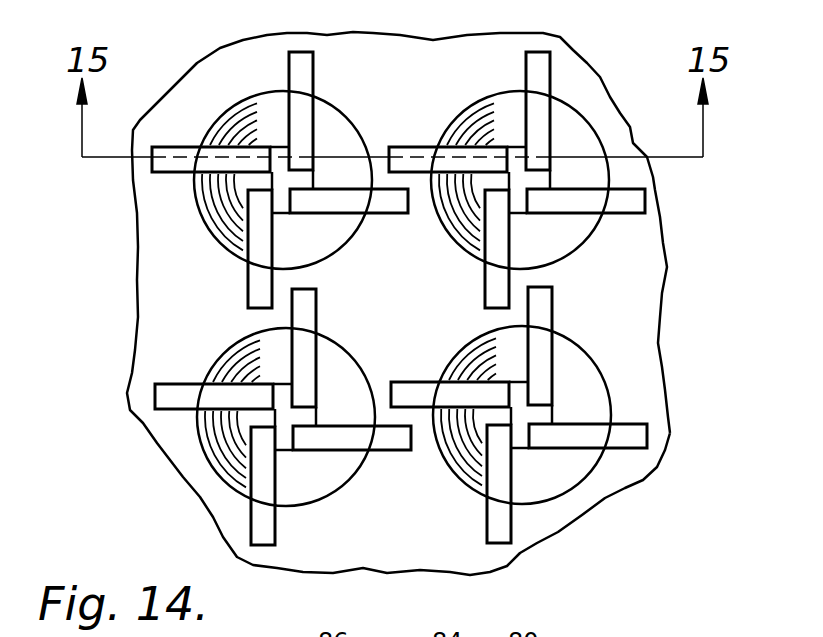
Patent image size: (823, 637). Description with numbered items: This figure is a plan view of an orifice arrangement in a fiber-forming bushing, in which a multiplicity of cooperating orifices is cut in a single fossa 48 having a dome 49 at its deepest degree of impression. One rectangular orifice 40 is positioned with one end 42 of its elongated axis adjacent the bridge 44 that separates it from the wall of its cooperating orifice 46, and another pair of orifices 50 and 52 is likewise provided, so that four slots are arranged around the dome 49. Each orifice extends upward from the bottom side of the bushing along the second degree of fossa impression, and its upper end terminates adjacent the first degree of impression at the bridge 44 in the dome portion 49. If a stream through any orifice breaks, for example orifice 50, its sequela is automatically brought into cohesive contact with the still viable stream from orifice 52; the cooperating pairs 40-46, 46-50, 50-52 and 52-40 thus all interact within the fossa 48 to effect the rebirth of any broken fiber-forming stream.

The rectangular orifice 40 is at (380, 202).
The end of orifice 42 is at (522, 447).
The bridge 44 is at (516, 452).
The cooperating orifice 46 is at (262, 288).
The fossa 48 is at (440, 468).
The dome portion of the fossa 49 is at (548, 414).
The orifice 50 is at (168, 155).
The orifice 52 is at (302, 66).